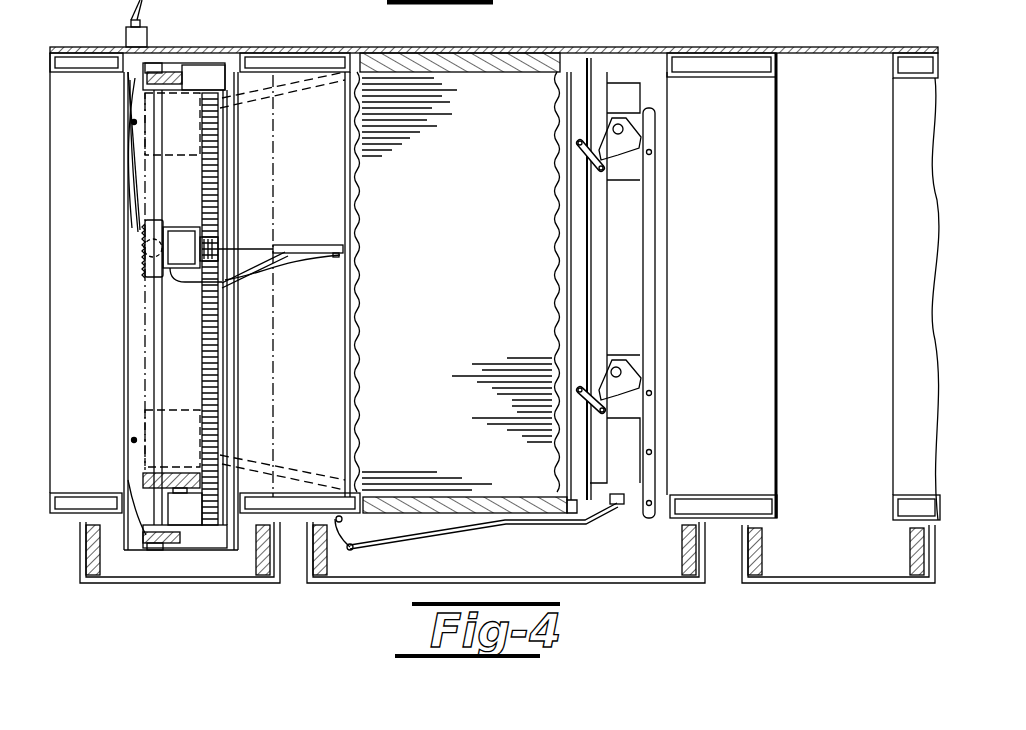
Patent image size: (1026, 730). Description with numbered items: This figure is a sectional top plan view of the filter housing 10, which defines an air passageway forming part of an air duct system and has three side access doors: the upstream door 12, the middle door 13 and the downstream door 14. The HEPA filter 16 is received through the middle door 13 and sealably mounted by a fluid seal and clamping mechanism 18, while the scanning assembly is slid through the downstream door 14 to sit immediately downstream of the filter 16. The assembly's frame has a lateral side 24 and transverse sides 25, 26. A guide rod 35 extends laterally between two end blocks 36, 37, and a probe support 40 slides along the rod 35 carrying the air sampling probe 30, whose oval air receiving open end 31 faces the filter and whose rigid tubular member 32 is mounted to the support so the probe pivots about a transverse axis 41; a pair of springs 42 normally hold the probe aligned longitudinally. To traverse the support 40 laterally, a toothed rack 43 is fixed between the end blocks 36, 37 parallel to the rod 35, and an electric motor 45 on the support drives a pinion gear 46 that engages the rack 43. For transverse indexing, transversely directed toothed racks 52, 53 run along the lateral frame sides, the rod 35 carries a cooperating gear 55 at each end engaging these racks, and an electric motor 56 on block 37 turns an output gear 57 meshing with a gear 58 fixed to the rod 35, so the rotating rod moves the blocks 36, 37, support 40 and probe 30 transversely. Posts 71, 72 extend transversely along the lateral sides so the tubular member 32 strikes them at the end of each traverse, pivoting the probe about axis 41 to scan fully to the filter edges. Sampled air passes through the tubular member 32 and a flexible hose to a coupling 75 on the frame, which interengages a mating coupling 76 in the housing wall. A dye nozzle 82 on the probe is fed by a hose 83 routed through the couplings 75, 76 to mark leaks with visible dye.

The filter housing 10 is at (645, 45).
The upstream door 12 is at (835, 585).
The middle door 13 is at (395, 585).
The downstream door 14 is at (155, 585).
The HEPA filter 16 is at (578, 276).
The fluid seal and clamping mechanism 18 is at (640, 368).
The lateral side of frame 24 is at (230, 538).
The transverse side of frame 25 is at (230, 58).
The transverse side of frame 26 is at (133, 380).
The air sampling probe 30 is at (355, 228).
The air receiving open end 31 is at (345, 250).
The rigid tubular member 32 is at (255, 248).
The guide rod 35 is at (153, 340).
The end block 36 is at (198, 73).
The end block 37 is at (215, 560).
The probe support 40 is at (145, 270).
The transverse axis 41 is at (143, 247).
The springs 42 is at (140, 232).
The toothed rack 43 is at (202, 330).
The electric motor 45 is at (180, 238).
The pinion gear 46 is at (220, 245).
The transversely directed toothed rack 52 is at (160, 72).
The transversely directed toothed rack 53 is at (175, 552).
The cooperating gear 55 is at (130, 78).
The electric motor 56 is at (165, 505).
The output gear 57 is at (178, 486).
The gear 58 is at (142, 470).
The post 71 is at (128, 124).
The post 72 is at (128, 438).
The coupling 75 is at (132, 93).
The mating coupling 76 is at (126, 32).
The dye nozzle 82 is at (262, 268).
The hose 83 is at (280, 280).